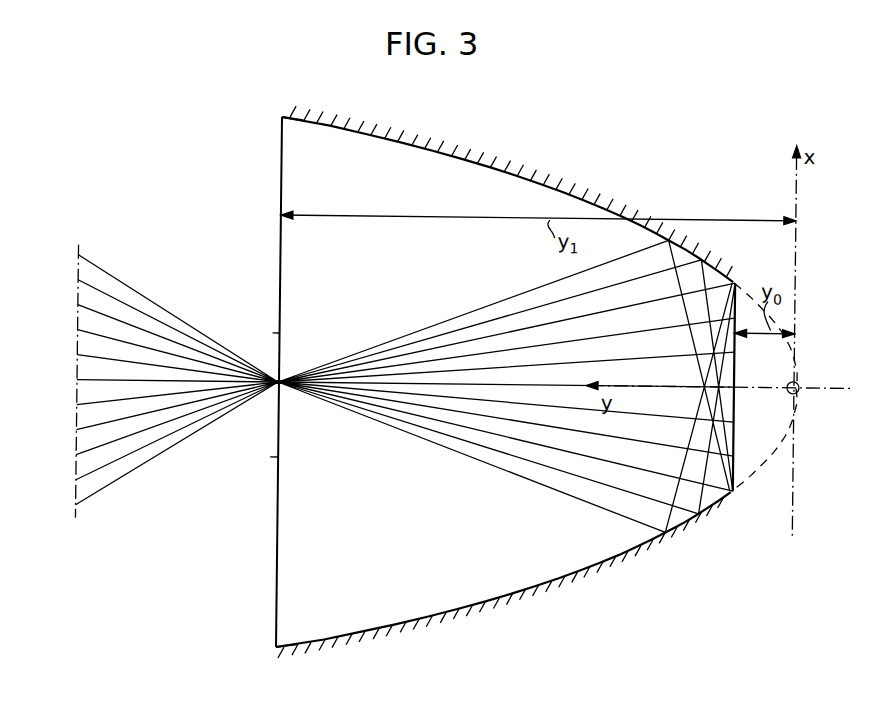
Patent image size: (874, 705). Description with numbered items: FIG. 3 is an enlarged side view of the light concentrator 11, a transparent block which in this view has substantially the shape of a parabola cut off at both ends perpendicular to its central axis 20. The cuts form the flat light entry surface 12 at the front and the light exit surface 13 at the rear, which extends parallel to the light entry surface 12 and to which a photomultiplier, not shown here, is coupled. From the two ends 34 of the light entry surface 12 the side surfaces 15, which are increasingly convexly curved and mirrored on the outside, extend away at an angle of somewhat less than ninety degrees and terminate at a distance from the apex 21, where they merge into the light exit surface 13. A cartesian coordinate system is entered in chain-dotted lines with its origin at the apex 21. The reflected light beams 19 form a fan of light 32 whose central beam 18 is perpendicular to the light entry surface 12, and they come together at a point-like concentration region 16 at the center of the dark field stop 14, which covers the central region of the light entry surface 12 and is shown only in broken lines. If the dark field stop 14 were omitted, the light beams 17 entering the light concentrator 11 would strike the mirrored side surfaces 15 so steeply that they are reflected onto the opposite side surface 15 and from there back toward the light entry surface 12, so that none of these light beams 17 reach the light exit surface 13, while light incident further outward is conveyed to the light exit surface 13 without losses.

The light concentrator 11 is at (532, 586).
The light entry surface 12 is at (279, 482).
The light exit surface 13 is at (738, 359).
The dark field stop 14 is at (272, 333).
The side surfaces 15 is at (583, 201).
The concentration region 16 is at (275, 386).
The light beams 17 is at (520, 316).
The central beam 18 is at (186, 384).
The reflected light beams 19 is at (123, 327).
The central axis 20 is at (799, 379).
The apex 21 is at (797, 397).
The fan of light 32 is at (193, 318).
The ends 34 is at (279, 116).